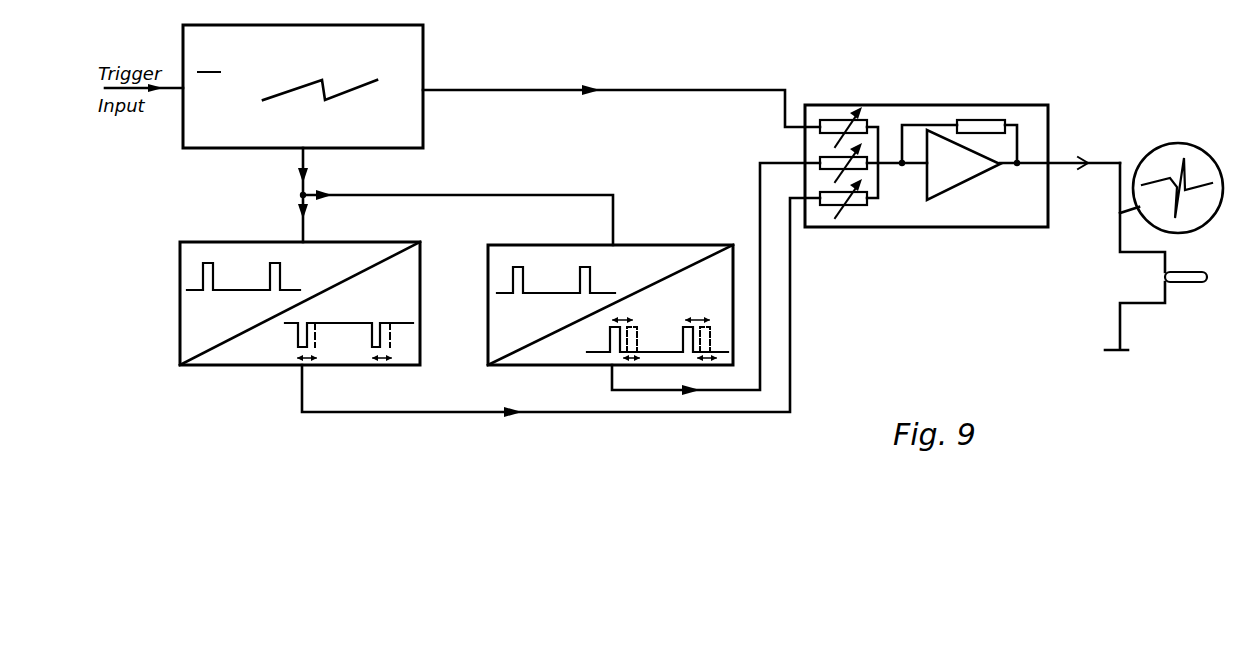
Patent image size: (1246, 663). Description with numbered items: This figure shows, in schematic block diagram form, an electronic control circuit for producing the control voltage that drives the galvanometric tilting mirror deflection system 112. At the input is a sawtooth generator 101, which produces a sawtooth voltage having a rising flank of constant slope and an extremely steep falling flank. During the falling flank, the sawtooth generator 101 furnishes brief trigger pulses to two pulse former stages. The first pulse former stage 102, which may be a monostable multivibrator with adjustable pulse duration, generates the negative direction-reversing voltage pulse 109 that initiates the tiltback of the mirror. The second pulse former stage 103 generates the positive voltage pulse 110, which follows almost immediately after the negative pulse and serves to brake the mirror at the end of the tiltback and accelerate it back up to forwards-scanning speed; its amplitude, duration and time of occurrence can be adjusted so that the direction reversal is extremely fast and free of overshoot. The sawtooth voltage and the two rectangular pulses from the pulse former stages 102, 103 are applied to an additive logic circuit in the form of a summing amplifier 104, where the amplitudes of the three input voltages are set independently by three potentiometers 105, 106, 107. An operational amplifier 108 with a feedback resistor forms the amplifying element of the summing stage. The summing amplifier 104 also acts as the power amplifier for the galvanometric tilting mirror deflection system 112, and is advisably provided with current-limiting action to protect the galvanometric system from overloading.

The sawtooth generator 101 is at (423, 61).
The pulse former stage 102 is at (322, 320).
The pulse former stage 103 is at (610, 299).
The summing amplifier 104 is at (896, 163).
The potentiometer 105 is at (830, 120).
The potentiometer 106 is at (820, 160).
The potentiometer 107 is at (827, 202).
The operational amplifier 108 is at (950, 190).
The negative voltage pulse 109 is at (297, 340).
The positive voltage pulse 110 is at (590, 348).
The galvanometric tilting mirror deflection system 112 is at (1166, 246).